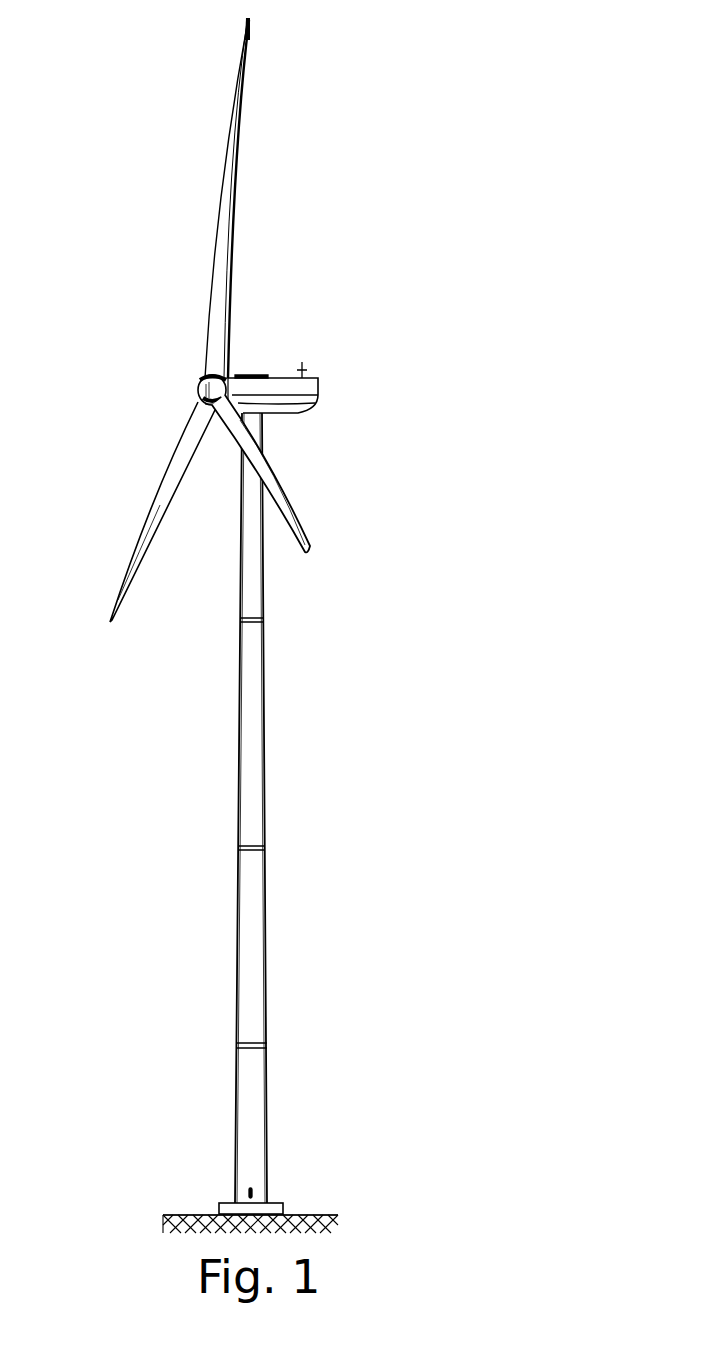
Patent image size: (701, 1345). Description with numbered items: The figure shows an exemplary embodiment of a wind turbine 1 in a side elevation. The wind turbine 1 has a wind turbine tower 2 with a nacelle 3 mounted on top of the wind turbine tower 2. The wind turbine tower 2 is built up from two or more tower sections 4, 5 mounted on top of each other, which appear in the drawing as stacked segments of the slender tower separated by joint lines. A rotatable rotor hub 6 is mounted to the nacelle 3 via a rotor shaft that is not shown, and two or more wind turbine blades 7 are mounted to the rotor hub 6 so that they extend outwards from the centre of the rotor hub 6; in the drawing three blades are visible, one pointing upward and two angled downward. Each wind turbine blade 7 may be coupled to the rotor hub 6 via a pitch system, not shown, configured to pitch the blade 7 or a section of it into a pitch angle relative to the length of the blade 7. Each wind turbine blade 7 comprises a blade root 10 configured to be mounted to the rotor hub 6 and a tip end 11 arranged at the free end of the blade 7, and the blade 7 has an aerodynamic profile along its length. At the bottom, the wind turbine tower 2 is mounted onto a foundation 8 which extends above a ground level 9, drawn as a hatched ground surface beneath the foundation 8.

The wind turbine 1 is at (334, 389).
The wind turbine tower 2 is at (277, 767).
The nacelle 3 is at (280, 373).
The tower section 4 is at (258, 828).
The tower section 5 is at (258, 945).
The rotor hub 6 is at (205, 387).
The wind turbine blade 7 is at (222, 262).
The foundation 8 is at (278, 1201).
The ground level 9 is at (333, 1215).
The blade root 10 is at (206, 377).
The tip end 11 is at (253, 20).